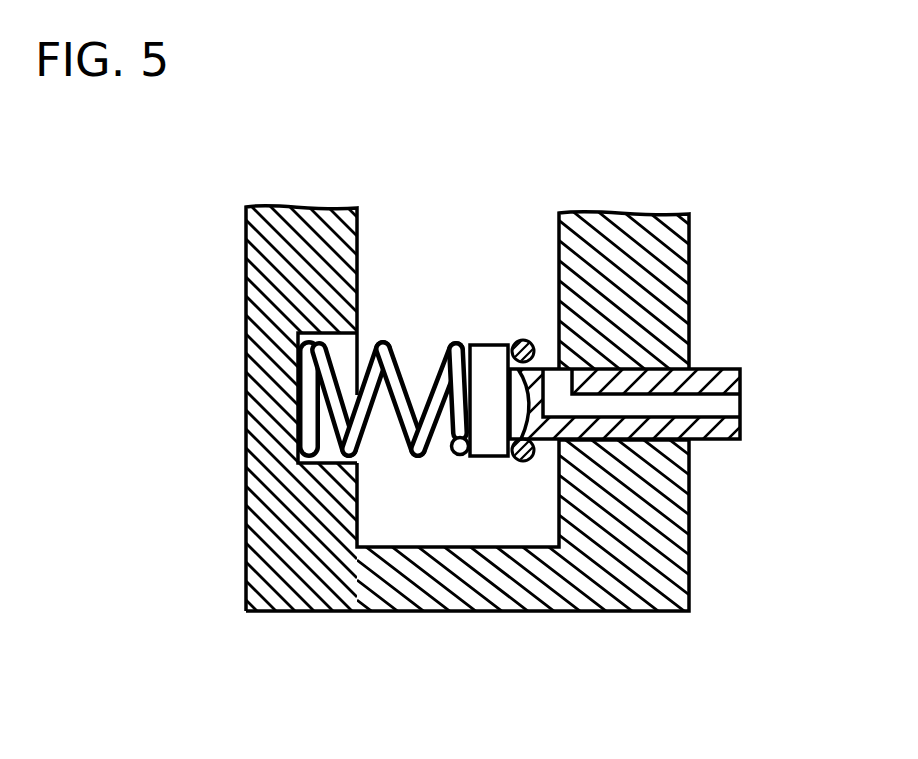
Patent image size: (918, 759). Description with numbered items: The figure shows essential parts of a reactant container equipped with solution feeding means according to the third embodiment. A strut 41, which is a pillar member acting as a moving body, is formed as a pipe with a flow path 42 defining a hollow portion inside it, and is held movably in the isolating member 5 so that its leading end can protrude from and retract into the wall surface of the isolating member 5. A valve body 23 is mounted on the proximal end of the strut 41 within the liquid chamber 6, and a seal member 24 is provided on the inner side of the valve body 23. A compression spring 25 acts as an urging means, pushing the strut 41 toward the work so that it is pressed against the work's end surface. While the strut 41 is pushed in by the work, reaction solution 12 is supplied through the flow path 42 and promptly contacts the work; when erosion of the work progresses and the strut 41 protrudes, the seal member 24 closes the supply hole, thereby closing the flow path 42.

The isolating member 5 is at (273, 580).
The reaction solution 12 is at (390, 515).
The liquid chamber 6 is at (440, 486).
The valve body 23 is at (493, 450).
The seal member 24 is at (523, 462).
The compression spring 25 is at (367, 395).
The strut 41 is at (714, 374).
The flow path 42 is at (715, 406).